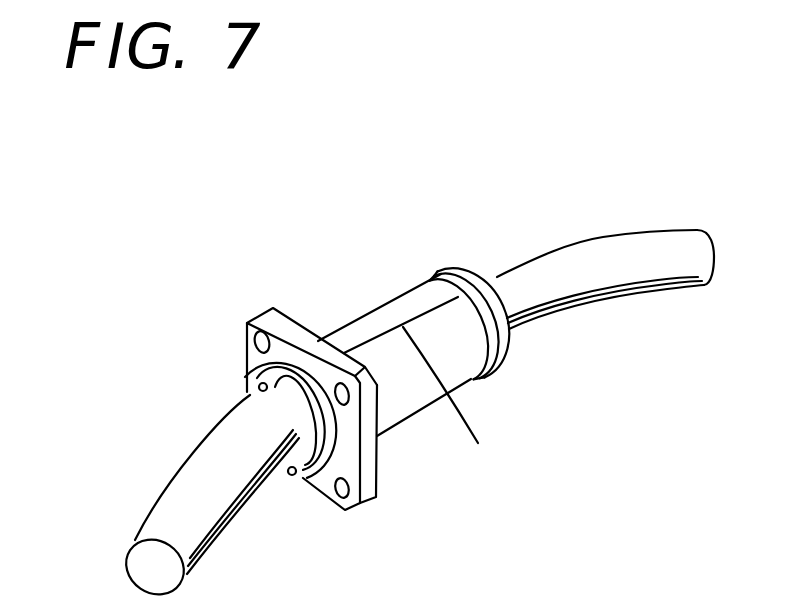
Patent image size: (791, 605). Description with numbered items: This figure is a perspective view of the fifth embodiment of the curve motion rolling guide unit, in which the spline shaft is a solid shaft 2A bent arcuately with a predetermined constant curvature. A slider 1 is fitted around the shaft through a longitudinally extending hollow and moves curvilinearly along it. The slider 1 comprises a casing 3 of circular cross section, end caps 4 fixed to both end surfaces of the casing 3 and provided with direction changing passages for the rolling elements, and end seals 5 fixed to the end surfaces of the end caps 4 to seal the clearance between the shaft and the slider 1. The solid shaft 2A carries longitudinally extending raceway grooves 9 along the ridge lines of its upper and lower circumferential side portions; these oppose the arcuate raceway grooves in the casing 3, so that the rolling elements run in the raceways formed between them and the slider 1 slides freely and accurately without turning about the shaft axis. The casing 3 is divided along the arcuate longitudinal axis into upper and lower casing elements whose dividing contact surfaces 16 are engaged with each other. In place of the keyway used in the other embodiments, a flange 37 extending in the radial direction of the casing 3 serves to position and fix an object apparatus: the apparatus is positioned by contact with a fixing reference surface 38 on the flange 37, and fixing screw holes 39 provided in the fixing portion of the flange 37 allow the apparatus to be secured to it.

The slider 1 is at (419, 285).
The solid shaft 2A is at (607, 262).
The casing 3 is at (395, 322).
The end caps 4 is at (496, 344).
The end seals 5 is at (488, 288).
The raceway grooves 9 is at (618, 287).
The dividing contact surfaces 16 is at (451, 402).
The flange 37 is at (287, 350).
The fixing reference surface 38 is at (377, 454).
The fixing screw holes 39 is at (384, 518).